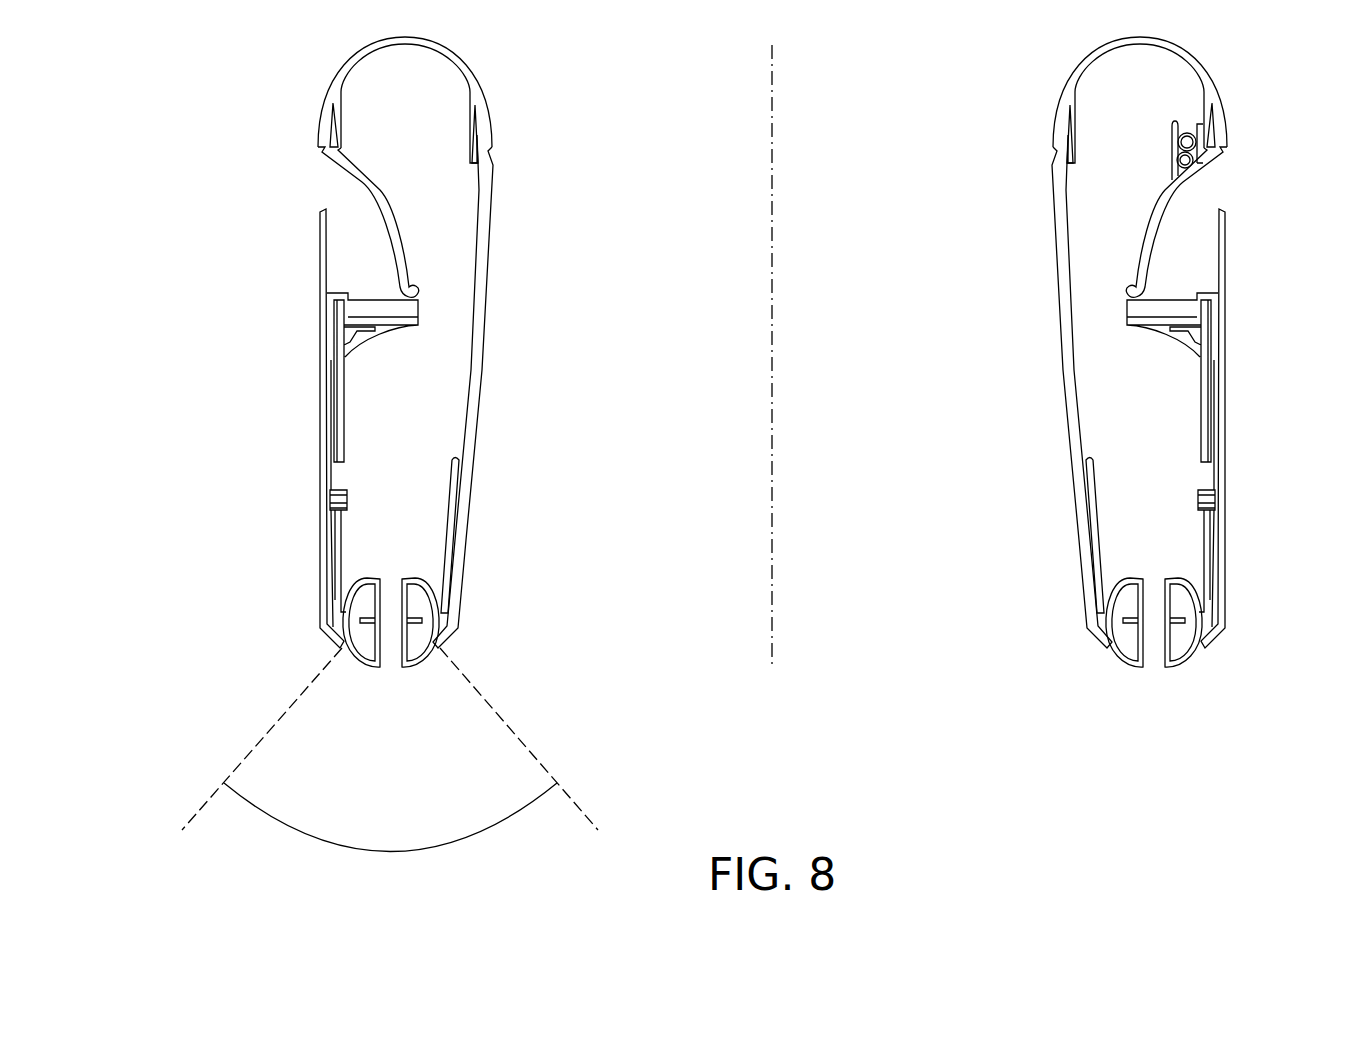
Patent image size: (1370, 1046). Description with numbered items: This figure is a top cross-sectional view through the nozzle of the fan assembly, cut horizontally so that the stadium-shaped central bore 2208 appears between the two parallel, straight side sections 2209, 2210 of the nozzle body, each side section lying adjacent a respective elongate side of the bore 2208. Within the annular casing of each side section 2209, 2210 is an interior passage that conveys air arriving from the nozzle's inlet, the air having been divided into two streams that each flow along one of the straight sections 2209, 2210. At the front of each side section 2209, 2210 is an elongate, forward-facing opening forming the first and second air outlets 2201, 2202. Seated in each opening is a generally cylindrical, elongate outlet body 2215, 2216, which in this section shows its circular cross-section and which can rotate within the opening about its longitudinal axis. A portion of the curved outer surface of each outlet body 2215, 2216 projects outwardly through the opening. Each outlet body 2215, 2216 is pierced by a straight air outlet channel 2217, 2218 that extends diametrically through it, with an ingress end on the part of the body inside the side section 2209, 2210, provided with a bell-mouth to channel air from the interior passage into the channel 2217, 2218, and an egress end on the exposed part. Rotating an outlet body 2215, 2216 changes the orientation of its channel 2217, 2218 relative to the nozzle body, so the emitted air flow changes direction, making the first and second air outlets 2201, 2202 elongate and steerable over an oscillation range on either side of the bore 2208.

The first air outlet 2201 is at (390, 444).
The second air outlet 2202 is at (1161, 387).
The bore 2208 is at (773, 107).
The first straight side section 2209 is at (328, 508).
The second straight side section 2210 is at (1217, 508).
The first outlet body 2215 is at (432, 605).
The second outlet body 2216 is at (1113, 603).
The first air outlet channel 2217 is at (375, 610).
The second air outlet channel 2218 is at (1172, 610).